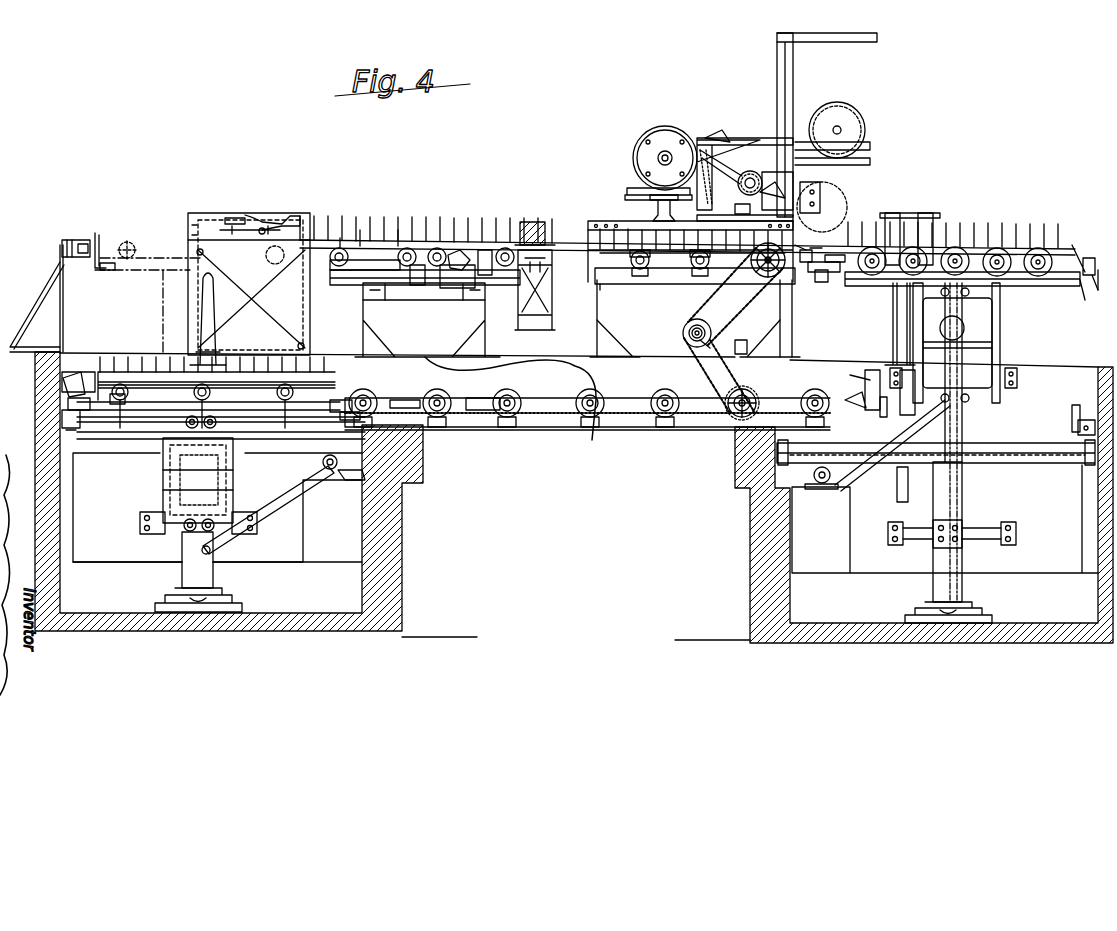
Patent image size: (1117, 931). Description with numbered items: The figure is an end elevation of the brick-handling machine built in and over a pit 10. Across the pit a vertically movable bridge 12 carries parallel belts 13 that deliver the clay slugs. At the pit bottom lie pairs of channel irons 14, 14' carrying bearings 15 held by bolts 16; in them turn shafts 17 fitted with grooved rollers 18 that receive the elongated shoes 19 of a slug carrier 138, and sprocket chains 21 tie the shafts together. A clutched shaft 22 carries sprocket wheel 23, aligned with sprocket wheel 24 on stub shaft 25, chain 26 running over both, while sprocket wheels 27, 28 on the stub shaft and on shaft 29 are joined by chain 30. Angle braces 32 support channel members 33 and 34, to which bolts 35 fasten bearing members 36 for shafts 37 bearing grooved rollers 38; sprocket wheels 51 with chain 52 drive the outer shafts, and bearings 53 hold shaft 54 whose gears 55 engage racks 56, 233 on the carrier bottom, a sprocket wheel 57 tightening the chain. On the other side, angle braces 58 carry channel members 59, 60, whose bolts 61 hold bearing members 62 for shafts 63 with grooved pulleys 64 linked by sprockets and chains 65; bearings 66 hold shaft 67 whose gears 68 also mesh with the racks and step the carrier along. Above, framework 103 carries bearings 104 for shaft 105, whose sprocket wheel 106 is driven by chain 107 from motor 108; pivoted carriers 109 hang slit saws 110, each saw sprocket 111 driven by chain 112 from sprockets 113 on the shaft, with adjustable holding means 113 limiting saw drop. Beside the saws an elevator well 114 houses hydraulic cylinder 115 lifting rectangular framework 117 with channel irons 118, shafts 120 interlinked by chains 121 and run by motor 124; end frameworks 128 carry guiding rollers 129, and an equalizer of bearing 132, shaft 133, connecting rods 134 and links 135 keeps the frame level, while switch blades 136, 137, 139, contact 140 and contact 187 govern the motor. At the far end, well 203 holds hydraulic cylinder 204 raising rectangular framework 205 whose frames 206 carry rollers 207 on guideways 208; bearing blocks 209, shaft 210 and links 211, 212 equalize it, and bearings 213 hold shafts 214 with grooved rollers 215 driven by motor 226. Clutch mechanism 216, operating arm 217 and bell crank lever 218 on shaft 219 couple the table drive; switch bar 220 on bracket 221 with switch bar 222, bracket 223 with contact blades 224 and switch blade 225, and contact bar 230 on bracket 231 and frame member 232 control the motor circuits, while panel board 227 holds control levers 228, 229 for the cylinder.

The pit 10 is at (95, 362).
The bridge 12 is at (520, 300).
The belts 13 is at (550, 276).
The channel irons 14 is at (587, 400).
The conveyor frame section 14' is at (542, 223).
The bearings 15 is at (587, 426).
The bolts 16 is at (800, 406).
The shaft 17 is at (590, 387).
The grooved rollers 18 is at (592, 393).
The elongated shoes 19 is at (168, 362).
The sprocket chains 21 is at (587, 396).
The shaft 22 is at (760, 398).
The sprocket wheel 23 is at (739, 399).
The sprocket wheel 24 is at (707, 350).
The stub shaft 25 is at (684, 336).
The sprocket chain 26 is at (705, 372).
The sprocket wheel 27 is at (690, 328).
The sprocket wheel 28 is at (745, 306).
The shaft 29 is at (802, 249).
The sprocket chain 30 is at (730, 310).
The angle braces 32 is at (608, 340).
The channel members 33 is at (598, 310).
The channel members 34 is at (610, 292).
The bolts 35 is at (635, 284).
The bearing members 36 is at (672, 275).
The shaft 37 is at (661, 249).
The grooved rollers 38 is at (585, 226).
The sprocket wheels 51 is at (750, 261).
The sprocket chain 52 is at (819, 250).
The bearings 53 is at (814, 285).
The shaft 54 is at (808, 285).
The gears 55 is at (816, 243).
The racks 56 is at (374, 246).
The sprocket wheel 57 is at (340, 395).
The angle braces 58 is at (370, 333).
The channel members 59 is at (424, 302).
The channel members 60 is at (421, 292).
The bolts 61 is at (425, 285).
The bearing members 62 is at (532, 212).
The shaft 63 is at (342, 248).
The grooved pulleys 64 is at (510, 217).
The sprocket chains 65 is at (415, 282).
The bearings 66 is at (457, 276).
The shaft 67 is at (484, 250).
The gears 68 is at (459, 260).
The framework 103 is at (797, 78).
The bearings 104 is at (756, 172).
The shaft 105 is at (760, 173).
The sprocket wheel 106 is at (721, 167).
The sprocket chain 107 is at (765, 165).
The motor 108 is at (670, 128).
The carriers 109 is at (725, 140).
The slit saw 110 is at (840, 202).
The sprocket 111 is at (832, 200).
The sprocket chain 112 is at (748, 209).
The adjustable holding means 113 is at (738, 148).
The elevator well 114 is at (1048, 585).
The hydraulic cylinder 115 is at (964, 514).
The rectangular framework 117 is at (1062, 286).
The channel irons 118 is at (873, 246).
The shaft 120 is at (930, 245).
The sprocket chains 121 is at (940, 250).
The driving motor 124 is at (962, 328).
The rectangular framework 128 is at (1000, 328).
The guiding rollers 129 is at (949, 352).
The bearing 132 is at (838, 482).
The shaft 133 is at (814, 475).
The connecting rod 134 is at (936, 450).
The connecting link 135 is at (960, 408).
The switch blade 136 is at (1076, 302).
The switch blade 137 is at (1093, 293).
The slug carrier 138 is at (135, 362).
The switch blade 139 is at (1080, 246).
The switch contact 140 is at (1098, 286).
The contact 187 is at (1083, 414).
The well 203 is at (136, 548).
The hydraulic cylinder 204 is at (214, 572).
The rectangular framework 205 is at (216, 386).
The frames 206 is at (165, 446).
The rollers 207 is at (201, 477).
The guideways 208 is at (250, 428).
The bearing blocks 209 is at (351, 481).
The shaft 210 is at (342, 460).
The connecting links 211 is at (278, 505).
The connecting links 212 is at (175, 489).
The bearings 213 is at (208, 402).
The shaft 214 is at (224, 409).
The grooved rollers 215 is at (202, 392).
The clutch mechanism 216 is at (485, 392).
The operating arm 217 is at (452, 398).
The bell crank lever 218 is at (330, 417).
The shaft 219 is at (349, 426).
The switch bar 220 is at (88, 375).
The bracket 221 is at (78, 378).
The switch bar 222 is at (76, 404).
The bracket 223 is at (60, 417).
The contact blades 224 is at (85, 418).
The switch blade 225 is at (108, 395).
The motor 226 is at (170, 457).
The panel board 227 is at (190, 228).
The control lever 228 is at (250, 232).
The control lever 229 is at (295, 222).
The contact bar 230 is at (92, 270).
The bracket 231 is at (86, 240).
The frame member 232 is at (40, 302).
The racks 233 is at (655, 222).